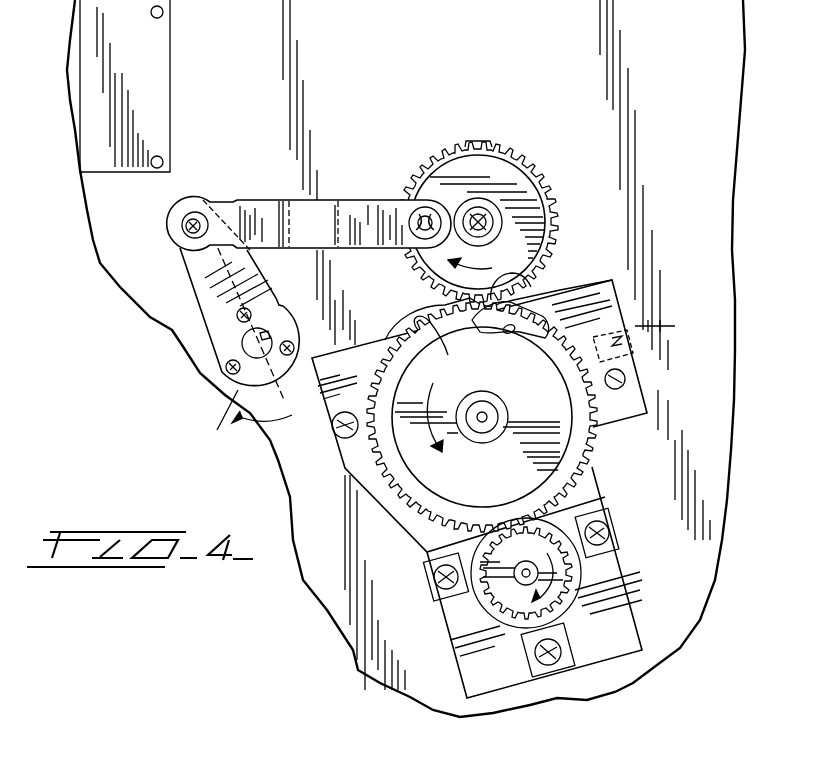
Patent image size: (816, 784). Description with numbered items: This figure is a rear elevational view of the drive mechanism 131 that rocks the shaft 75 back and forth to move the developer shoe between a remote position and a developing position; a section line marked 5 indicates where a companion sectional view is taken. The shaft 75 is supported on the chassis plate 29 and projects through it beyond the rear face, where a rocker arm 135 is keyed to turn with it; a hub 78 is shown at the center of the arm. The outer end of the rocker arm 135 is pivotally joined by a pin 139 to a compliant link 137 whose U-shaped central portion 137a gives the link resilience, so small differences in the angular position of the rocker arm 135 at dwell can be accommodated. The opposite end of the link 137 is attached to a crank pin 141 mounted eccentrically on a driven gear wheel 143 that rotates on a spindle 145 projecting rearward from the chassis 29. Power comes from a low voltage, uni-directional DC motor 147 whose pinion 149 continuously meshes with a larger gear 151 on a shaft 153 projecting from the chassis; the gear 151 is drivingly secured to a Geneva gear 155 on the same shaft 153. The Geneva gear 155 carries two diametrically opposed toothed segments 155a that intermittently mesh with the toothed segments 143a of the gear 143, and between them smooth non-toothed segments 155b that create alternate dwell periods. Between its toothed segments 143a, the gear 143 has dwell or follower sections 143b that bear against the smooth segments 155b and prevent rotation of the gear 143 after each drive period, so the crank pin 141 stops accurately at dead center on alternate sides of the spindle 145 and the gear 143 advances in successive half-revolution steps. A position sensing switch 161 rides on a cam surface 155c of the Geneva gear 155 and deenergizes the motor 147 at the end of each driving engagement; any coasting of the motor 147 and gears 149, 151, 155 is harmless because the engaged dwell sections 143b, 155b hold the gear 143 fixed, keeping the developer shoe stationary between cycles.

The chassis plate 29 is at (442, 66).
The section line 5- 5 is at (205, 184).
The drive mechanism 131 is at (590, 210).
The rocker arm 135 is at (209, 333).
The shaft 75 is at (240, 337).
The hub shaft 78 is at (257, 343).
The compliant link 137 is at (277, 195).
The U-shaped central portion 137a is at (292, 200).
The pin 139 is at (191, 226).
The crank pin 141 is at (413, 220).
The driven gear wheel 143 is at (494, 206).
The gear segments 143a is at (418, 290).
The dwell or follower sections 143b is at (497, 120).
The spindle 145 is at (481, 230).
The DC motor 147 is at (590, 560).
The pinion 149 is at (510, 620).
The gear 151 is at (496, 489).
The shaft 153 is at (483, 415).
The Geneva gear 155 is at (481, 434).
The toothed gear segments 155a is at (600, 403).
The smooth non-toothed segments 155b is at (418, 330).
The cam surface 155c is at (483, 333).
The position sensing switch 161 is at (650, 339).